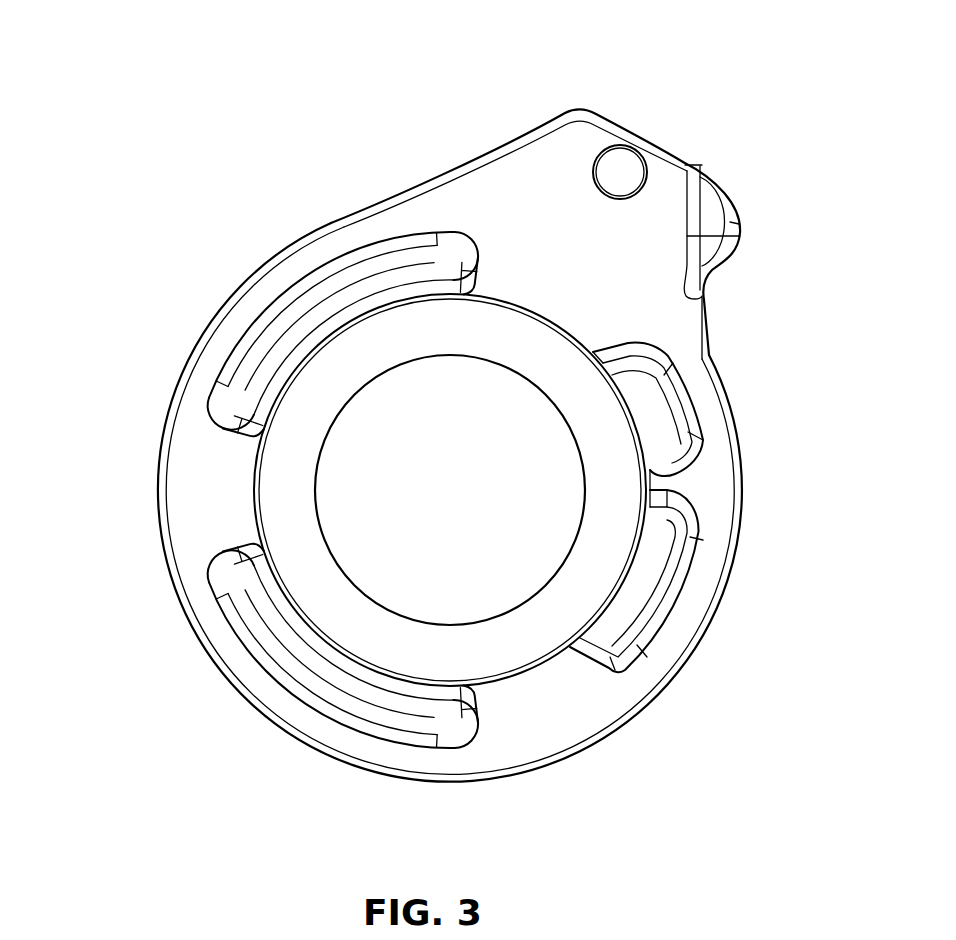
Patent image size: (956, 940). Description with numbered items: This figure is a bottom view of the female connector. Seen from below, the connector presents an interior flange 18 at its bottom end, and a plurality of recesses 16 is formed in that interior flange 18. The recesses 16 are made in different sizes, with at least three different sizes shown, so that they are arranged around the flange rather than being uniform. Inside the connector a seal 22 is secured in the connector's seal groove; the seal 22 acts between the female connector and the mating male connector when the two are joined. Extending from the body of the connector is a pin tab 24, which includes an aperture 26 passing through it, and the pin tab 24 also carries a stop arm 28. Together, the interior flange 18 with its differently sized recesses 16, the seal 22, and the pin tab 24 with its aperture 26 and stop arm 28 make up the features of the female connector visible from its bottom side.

The recesses 16 is at (252, 390).
The interior flange 18 is at (552, 300).
The seal 22 is at (375, 353).
The pin tab 24 is at (536, 182).
The aperture 26 is at (615, 163).
The stop arm 28 is at (720, 200).